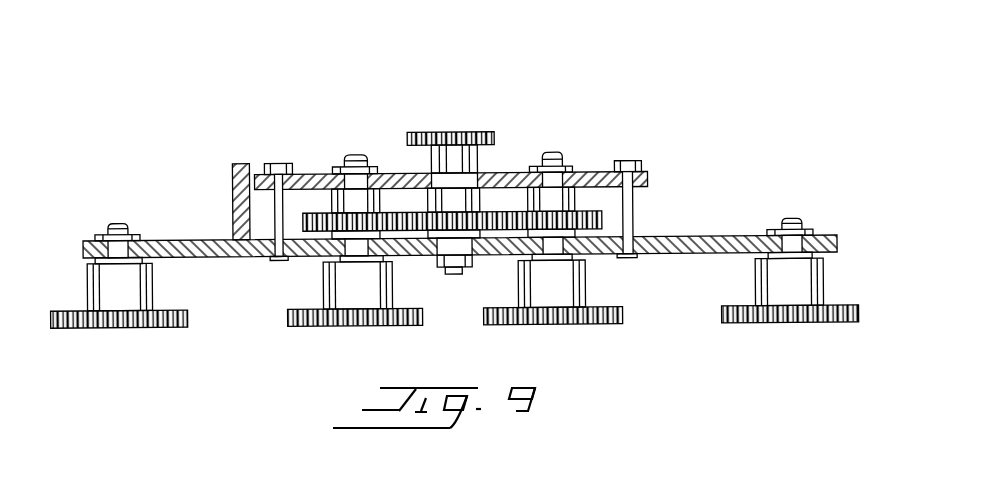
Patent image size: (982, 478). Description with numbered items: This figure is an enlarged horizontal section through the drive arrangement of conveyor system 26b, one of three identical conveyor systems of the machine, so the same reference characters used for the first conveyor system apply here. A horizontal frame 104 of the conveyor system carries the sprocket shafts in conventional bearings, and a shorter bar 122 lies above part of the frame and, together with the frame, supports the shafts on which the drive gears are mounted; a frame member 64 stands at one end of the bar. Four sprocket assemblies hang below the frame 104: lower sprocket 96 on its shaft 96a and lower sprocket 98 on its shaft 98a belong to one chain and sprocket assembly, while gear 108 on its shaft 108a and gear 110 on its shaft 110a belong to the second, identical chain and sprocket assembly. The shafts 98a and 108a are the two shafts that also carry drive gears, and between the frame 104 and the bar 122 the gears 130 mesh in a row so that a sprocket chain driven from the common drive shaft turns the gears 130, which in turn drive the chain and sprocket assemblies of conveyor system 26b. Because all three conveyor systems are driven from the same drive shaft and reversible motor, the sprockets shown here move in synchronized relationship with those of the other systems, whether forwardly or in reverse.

The conveyor system 26b is at (259, 347).
The support frame member 64 is at (233, 166).
The lower sprocket 96 is at (139, 330).
The shaft 96a is at (142, 197).
The lower sprocket 98 is at (344, 330).
The shaft 98a is at (377, 132).
The frame 104 is at (714, 237).
The gear 108 is at (589, 330).
The shaft 108a is at (549, 153).
The gear 110 is at (782, 327).
The shaft 110a is at (812, 196).
The bar 122 is at (503, 175).
The gears 130 is at (608, 215).